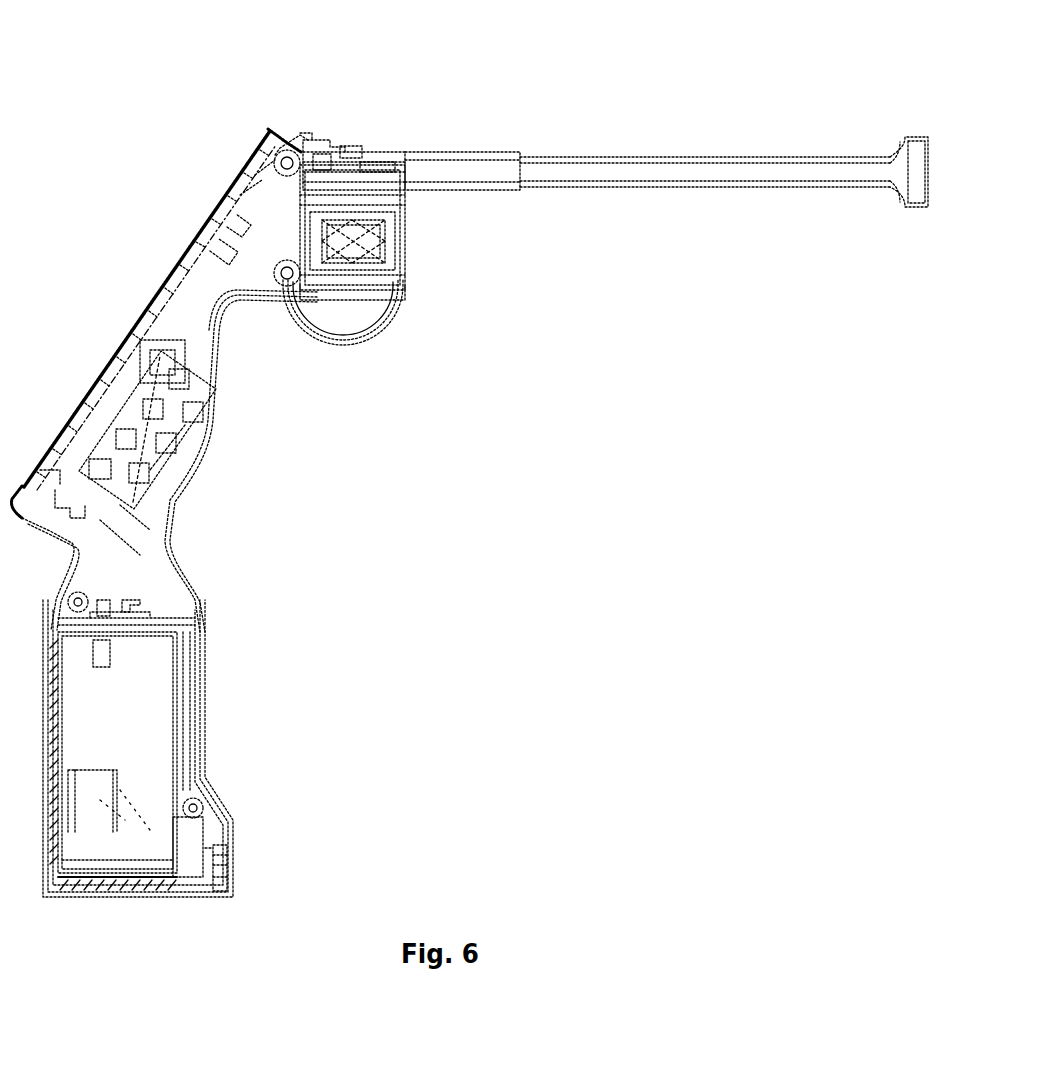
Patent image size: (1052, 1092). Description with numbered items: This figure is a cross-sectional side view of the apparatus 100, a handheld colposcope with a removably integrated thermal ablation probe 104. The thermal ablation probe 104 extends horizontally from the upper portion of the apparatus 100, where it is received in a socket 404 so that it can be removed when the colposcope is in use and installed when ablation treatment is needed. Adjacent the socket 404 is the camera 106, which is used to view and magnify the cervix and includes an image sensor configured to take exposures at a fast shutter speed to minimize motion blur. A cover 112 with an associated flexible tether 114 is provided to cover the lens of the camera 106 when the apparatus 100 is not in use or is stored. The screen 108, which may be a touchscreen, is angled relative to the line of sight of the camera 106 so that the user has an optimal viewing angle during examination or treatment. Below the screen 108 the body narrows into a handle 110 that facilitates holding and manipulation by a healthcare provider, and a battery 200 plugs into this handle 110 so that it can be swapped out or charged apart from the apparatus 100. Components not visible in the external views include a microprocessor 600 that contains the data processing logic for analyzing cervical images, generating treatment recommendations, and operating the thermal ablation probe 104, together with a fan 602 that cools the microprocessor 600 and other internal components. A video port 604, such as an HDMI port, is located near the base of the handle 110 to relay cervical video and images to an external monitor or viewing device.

The apparatus 100 is at (557, 63).
The thermal ablation probe 104 is at (712, 158).
The camera 106 is at (388, 235).
The screen 108 is at (178, 270).
The handle 110 is at (205, 628).
The cover 112 is at (402, 282).
The flexible tether 114 is at (345, 346).
The battery 200 is at (129, 747).
The socket 404 is at (387, 152).
The microprocessor 600 is at (130, 421).
The fan 602 is at (160, 450).
The video port 604 is at (222, 870).